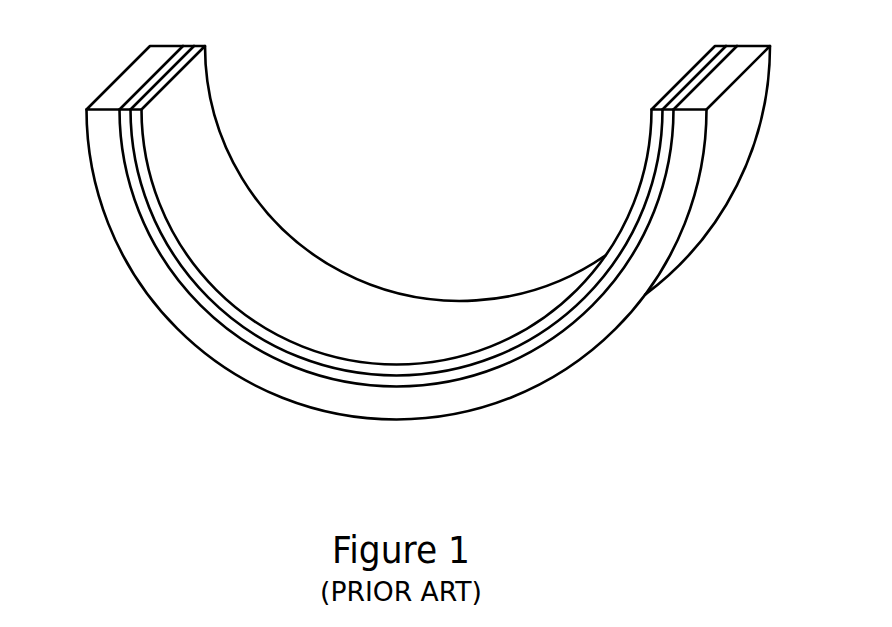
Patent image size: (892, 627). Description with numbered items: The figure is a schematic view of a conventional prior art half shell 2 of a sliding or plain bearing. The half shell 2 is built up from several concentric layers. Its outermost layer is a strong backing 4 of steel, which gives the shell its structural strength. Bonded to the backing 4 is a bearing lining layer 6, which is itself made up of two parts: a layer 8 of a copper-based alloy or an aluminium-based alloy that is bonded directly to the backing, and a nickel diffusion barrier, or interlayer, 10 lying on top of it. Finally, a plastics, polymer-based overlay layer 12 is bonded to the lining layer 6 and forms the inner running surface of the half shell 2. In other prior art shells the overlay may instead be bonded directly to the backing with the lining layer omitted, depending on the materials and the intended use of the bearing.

The half shell 2 is at (428, 245).
The backing 4 is at (173, 307).
The bearing lining layer 6 is at (548, 351).
The layer of a copper-based alloy or an aluminium-based alloy 8 is at (263, 351).
The nickel diffusion barrier 10 is at (208, 302).
The overlay layer 12 is at (357, 310).